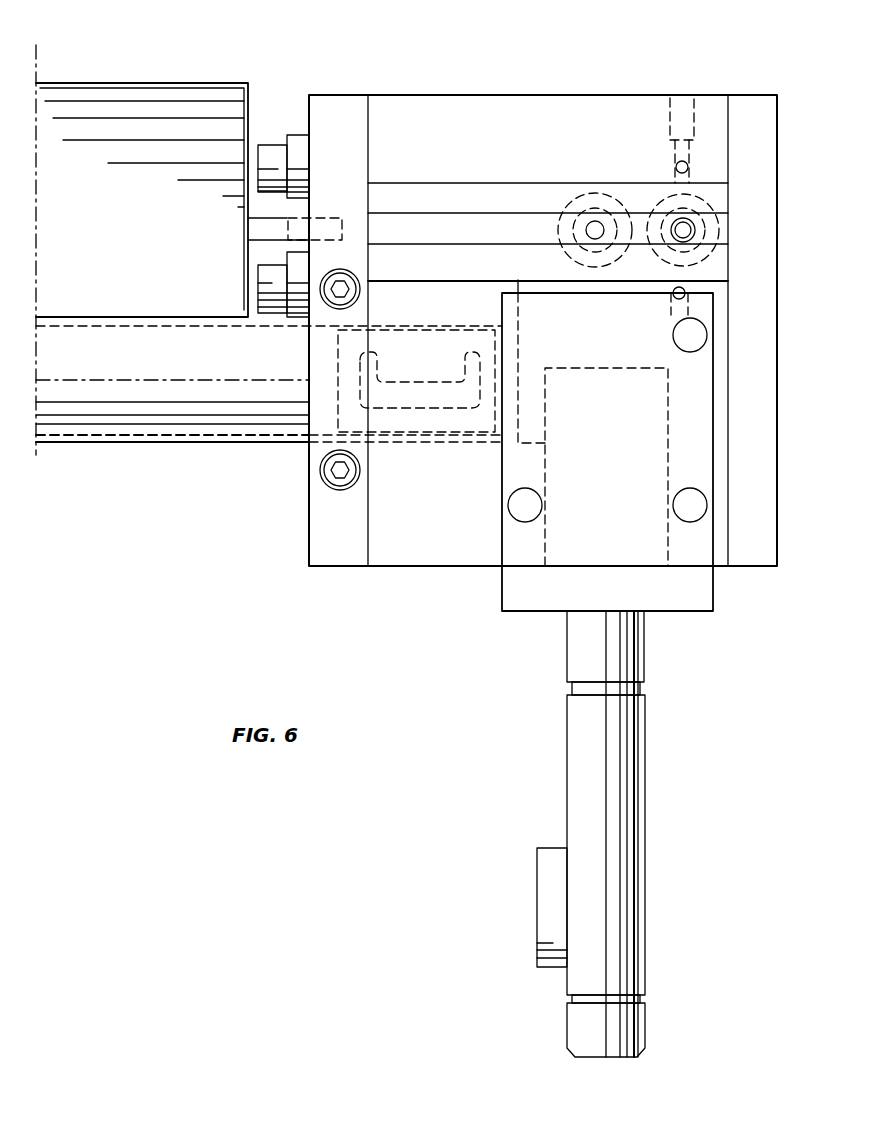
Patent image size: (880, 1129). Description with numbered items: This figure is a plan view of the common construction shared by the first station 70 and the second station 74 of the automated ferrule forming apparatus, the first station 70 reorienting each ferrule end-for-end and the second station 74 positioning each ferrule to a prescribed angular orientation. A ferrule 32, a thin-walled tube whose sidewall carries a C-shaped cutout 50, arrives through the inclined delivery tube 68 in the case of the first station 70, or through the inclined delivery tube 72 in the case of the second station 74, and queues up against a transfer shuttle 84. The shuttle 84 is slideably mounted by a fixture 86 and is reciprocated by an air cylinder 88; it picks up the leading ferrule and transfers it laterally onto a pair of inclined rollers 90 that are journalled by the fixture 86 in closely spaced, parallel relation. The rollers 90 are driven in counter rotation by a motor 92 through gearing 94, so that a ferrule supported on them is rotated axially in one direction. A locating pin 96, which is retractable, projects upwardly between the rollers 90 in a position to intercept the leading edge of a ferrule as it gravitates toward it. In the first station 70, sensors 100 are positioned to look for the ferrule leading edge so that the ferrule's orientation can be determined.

The first station 70 is at (521, 284).
The second station 74 is at (321, 68).
The inclined rollers 90 is at (467, 245).
The motor 92 is at (146, 226).
The gearing 94 is at (296, 212).
The fixture 86 is at (312, 452).
The inclined delivery tube 68 is at (269, 415).
The inclined delivery tube 72 is at (122, 444).
The ferrule 32 is at (340, 375).
The C-shaped cutout 50 is at (418, 400).
The transfer shuttle 84 is at (618, 372).
The locating pin 96 is at (690, 230).
The sensors 100 is at (676, 166).
The air cylinder 88 is at (622, 795).